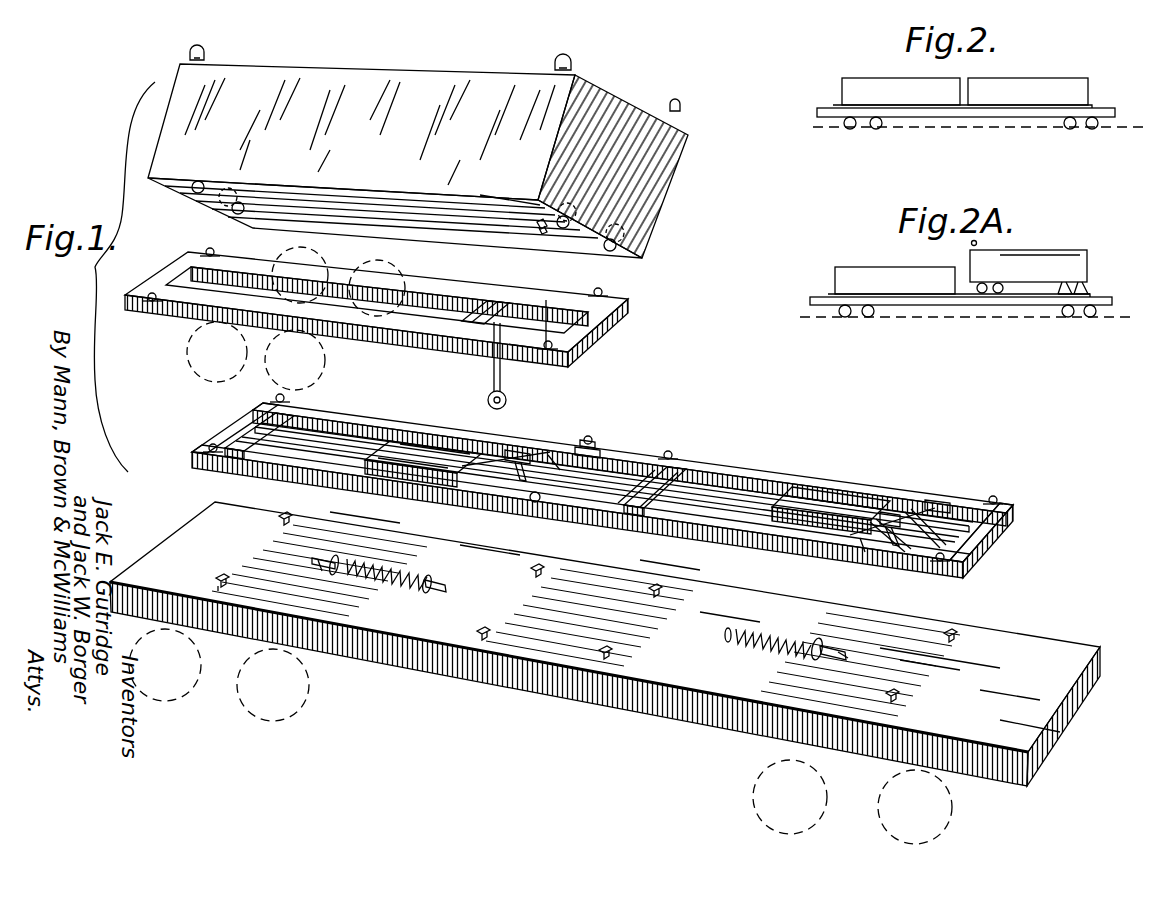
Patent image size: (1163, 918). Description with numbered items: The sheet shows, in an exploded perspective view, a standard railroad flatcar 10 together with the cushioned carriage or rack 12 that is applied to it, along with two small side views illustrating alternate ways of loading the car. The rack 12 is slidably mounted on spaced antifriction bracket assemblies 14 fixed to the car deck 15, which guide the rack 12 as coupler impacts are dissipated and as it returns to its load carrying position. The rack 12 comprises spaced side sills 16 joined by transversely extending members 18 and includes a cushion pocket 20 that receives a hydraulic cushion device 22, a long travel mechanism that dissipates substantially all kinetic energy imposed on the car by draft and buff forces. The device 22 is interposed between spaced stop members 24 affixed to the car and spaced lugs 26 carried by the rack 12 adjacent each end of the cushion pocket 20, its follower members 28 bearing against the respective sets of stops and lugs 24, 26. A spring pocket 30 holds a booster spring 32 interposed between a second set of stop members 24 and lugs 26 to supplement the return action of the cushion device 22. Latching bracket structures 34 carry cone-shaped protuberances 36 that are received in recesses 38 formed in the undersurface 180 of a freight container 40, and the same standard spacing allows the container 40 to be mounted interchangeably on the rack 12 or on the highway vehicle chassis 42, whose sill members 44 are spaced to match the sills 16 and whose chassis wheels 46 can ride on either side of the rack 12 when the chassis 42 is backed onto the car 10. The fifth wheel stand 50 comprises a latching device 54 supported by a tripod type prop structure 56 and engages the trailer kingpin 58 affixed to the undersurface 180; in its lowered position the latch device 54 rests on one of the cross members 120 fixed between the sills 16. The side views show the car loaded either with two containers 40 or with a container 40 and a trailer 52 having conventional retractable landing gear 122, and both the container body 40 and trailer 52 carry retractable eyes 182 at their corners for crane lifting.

In FIG. 1, the railroad flatcar 10 is at (630, 703).
In FIG. 2A, the railroad flatcar 10 is at (991, 307).
In FIG. 1, the cushioned carriage or rack 12 is at (930, 494).
In FIG. 2A, the cushioned carriage or rack 12 is at (1020, 292).
In FIG. 1, the antifriction bracket assemblies 14 is at (283, 510).
In FIG. 1, the car deck 15 is at (1005, 645).
In FIG. 1, the side sills 16 is at (722, 462).
In FIG. 1, the transversely extending members 18 is at (262, 423).
In FIG. 1, the cushion pocket 20 is at (420, 440).
In FIG. 1, the hydraulic cushion device 22 is at (352, 583).
In FIG. 1, the stop members 24 is at (442, 590).
In FIG. 1, the lugs 26 is at (335, 433).
In FIG. 1, the follower members 28 is at (334, 556).
In FIG. 1, the spring pocket 30 is at (790, 490).
In FIG. 1, the booster spring 32 is at (775, 628).
In FIG. 1, the bracket structure 34 is at (208, 246).
In FIG. 1, the cone-shaped protuberance 36 is at (586, 440).
In FIG. 1, the recess 38 is at (570, 220).
In FIG. 1, the freight container 40 is at (670, 190).
In FIG. 1, the highway vehicle chassis 42 is at (630, 332).
In FIG. 1, the sill members 44 is at (505, 293).
In FIG. 1, the chassis wheels 46 is at (190, 362).
In FIG. 1, the fifth wheel stand 50 is at (520, 447).
In FIG. 2A, the fifth wheel stand 50 is at (1090, 290).
In FIG. 2A, the trailer 52 is at (1058, 264).
In FIG. 1, the latching device 54 is at (520, 462).
In FIG. 1, the tripod type prop structure 56 is at (935, 507).
In FIG. 1, the kingpin 58 is at (530, 226).
In FIG. 1, the cross members 120 is at (862, 540).
In FIG. 1, the landing gear 122 is at (508, 393).
In FIG. 2A, the landing gear 122 is at (1080, 290).
In FIG. 1, the undersurface 180 is at (515, 205).
In FIG. 1, the retractable eyes 182 is at (212, 52).
In FIG. 2A, the retractable eyes 182 is at (972, 244).